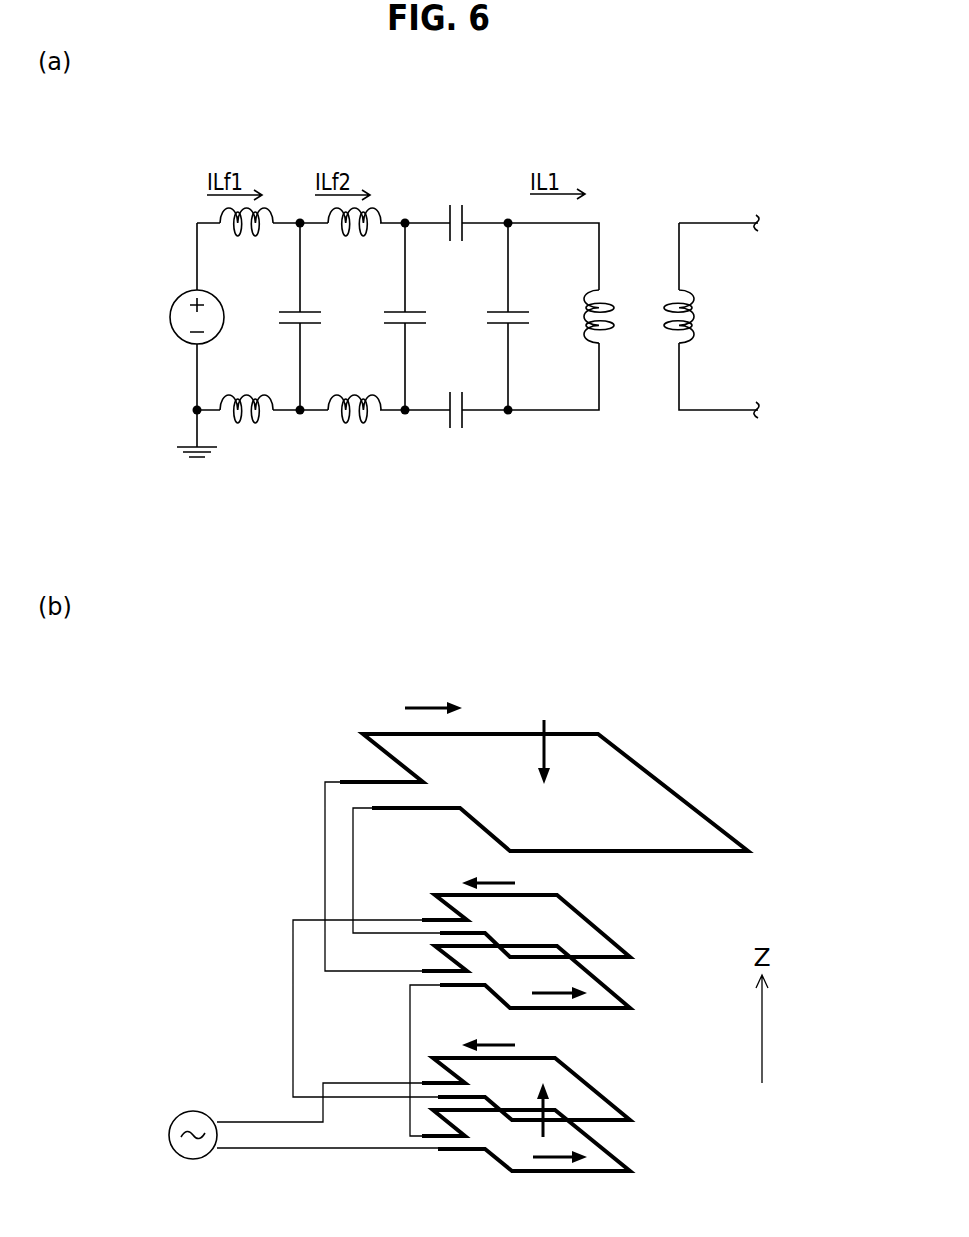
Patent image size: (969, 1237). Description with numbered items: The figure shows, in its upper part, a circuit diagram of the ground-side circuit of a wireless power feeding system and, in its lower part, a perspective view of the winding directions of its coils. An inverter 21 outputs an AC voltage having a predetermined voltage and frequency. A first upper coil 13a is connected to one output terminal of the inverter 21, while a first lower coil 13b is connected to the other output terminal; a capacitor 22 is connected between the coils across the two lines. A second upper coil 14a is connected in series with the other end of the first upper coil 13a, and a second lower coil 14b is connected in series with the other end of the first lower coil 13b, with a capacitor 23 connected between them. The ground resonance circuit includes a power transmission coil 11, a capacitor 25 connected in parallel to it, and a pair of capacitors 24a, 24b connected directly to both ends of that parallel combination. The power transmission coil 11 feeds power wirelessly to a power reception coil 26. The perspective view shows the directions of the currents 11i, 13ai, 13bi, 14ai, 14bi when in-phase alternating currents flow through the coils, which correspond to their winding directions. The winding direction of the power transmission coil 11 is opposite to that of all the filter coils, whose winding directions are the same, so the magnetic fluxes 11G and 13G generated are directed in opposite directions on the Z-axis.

The power transmission coil 11 is at (613, 288).
The current in power transmission coil 11i is at (426, 702).
The magnetic flux of power transmission coil 11G is at (547, 746).
The first upper coil 13a is at (274, 208).
The first lower coil 13b is at (250, 394).
The current in first upper coil 13ai is at (545, 1163).
The current in first lower coil 13bi is at (495, 1040).
The magnetic flux of filter coils 13G is at (537, 1128).
The second upper coil 14a is at (381, 208).
The second lower coil 14b is at (358, 394).
The current in second upper coil 14ai is at (563, 1000).
The current in second lower coil 14bi is at (502, 873).
The inverter 21 is at (173, 300).
The capacitor 22 is at (312, 306).
The capacitor 23 is at (417, 306).
The capacitor 24a is at (470, 206).
The capacitor 24b is at (470, 393).
The capacitor 25 is at (519, 306).
The power reception coil 26 is at (671, 288).